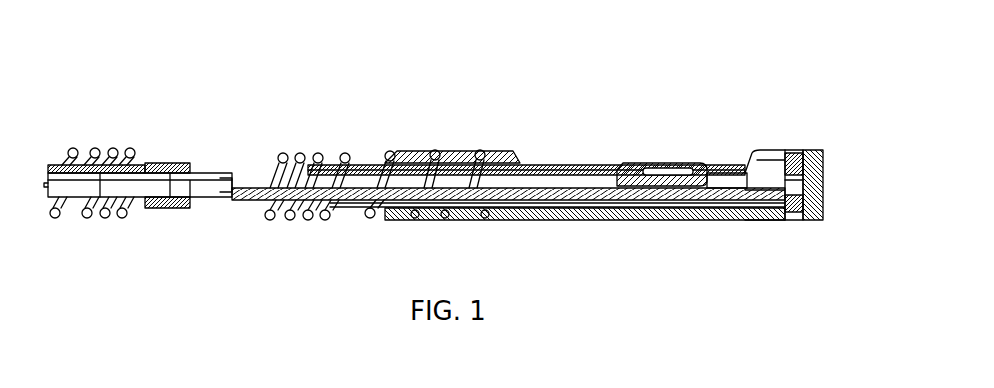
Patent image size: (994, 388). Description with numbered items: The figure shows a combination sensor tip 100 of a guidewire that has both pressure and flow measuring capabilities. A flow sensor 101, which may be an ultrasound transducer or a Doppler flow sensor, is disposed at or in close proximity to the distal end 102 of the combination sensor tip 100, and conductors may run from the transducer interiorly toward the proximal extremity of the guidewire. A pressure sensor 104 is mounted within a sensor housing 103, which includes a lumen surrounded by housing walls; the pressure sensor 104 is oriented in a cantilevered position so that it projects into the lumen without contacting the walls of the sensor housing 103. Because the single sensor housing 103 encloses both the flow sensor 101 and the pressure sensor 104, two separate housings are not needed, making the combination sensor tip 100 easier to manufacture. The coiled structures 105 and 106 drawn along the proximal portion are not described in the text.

The combination sensor tip 100 is at (463, 112).
The flow sensor 101 is at (797, 153).
The distal end 102 is at (813, 150).
The sensor housing 103 is at (616, 221).
The pressure sensor 104 is at (623, 163).
The inner spring 105 is at (303, 152).
The outer spring 106 is at (116, 150).